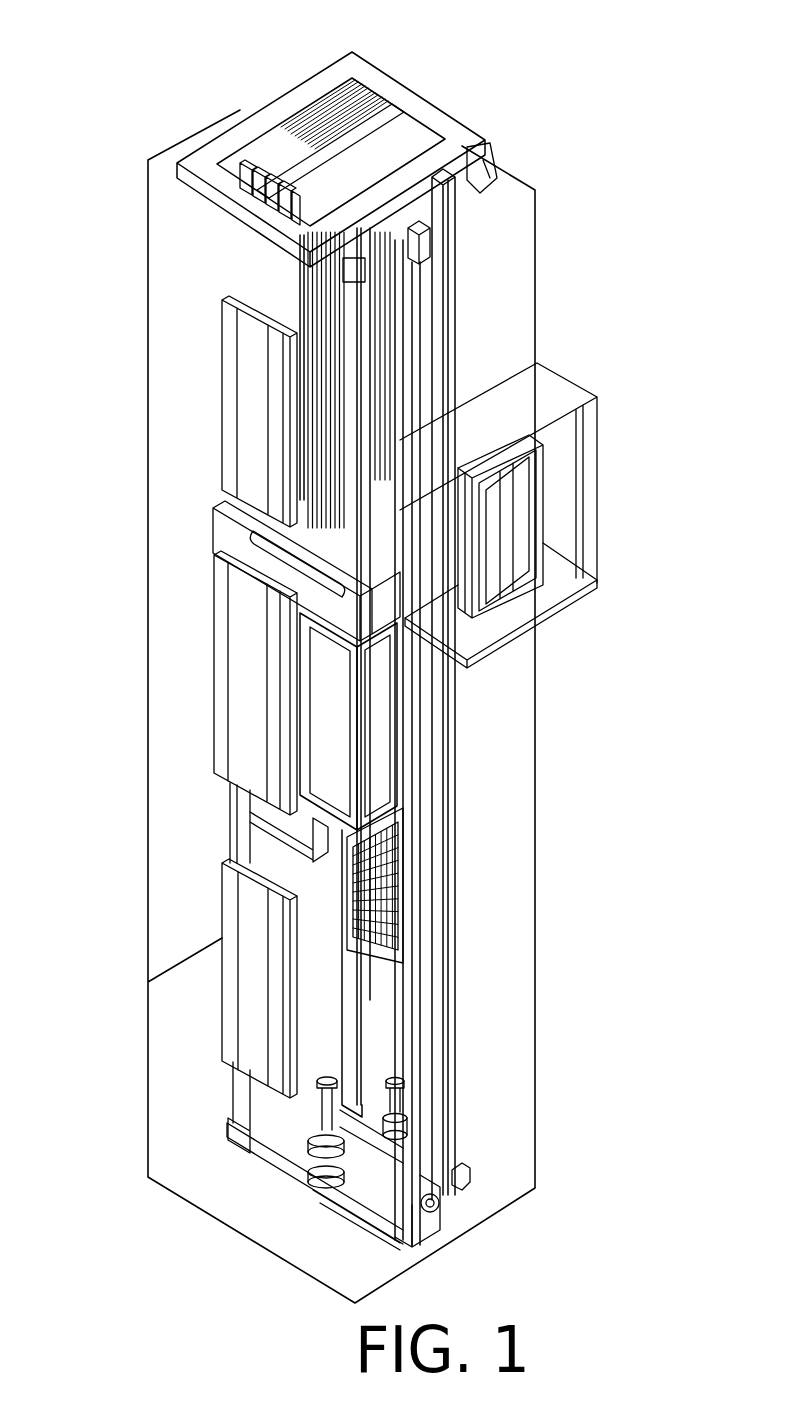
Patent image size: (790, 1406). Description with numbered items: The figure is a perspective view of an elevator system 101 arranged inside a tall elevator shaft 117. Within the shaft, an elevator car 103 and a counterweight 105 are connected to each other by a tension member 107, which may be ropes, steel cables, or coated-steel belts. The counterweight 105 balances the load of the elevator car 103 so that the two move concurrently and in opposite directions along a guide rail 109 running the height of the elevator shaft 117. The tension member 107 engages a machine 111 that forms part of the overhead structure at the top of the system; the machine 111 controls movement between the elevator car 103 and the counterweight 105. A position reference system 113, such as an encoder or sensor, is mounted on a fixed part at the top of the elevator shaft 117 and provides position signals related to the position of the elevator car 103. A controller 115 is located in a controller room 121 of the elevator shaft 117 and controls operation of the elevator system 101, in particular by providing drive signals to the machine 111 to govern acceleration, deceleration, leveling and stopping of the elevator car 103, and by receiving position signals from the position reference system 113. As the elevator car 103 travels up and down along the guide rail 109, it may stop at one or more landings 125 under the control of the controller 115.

The elevator system 101 is at (556, 83).
The elevator car 103 is at (340, 720).
The counterweight 105 is at (397, 908).
The tension member 107 is at (342, 407).
The guide rail 109 is at (427, 833).
The machine 111 is at (253, 160).
The position reference system 113 is at (433, 260).
The controller 115 is at (537, 527).
The elevator shaft 117 is at (203, 839).
The controller room 121 is at (602, 397).
The landings 125 is at (221, 404).